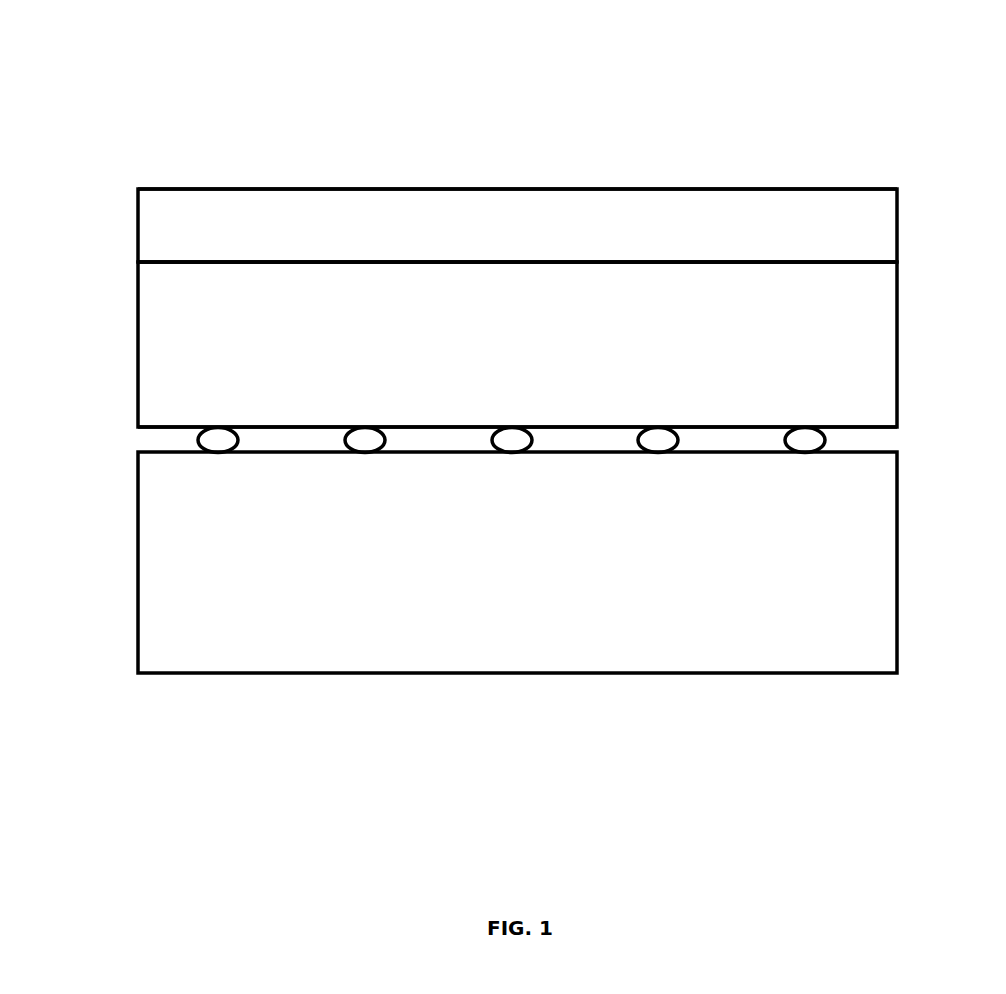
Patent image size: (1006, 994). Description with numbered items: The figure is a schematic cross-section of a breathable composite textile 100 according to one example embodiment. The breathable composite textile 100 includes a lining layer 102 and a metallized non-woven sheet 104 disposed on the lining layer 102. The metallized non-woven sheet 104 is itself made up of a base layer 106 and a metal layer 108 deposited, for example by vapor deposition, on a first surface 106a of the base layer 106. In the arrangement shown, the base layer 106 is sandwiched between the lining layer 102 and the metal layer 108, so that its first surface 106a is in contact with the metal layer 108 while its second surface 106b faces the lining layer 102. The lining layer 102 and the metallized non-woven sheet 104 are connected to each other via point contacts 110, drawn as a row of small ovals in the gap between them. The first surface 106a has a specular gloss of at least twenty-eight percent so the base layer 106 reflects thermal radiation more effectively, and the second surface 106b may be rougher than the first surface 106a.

The breathable composite textile 100 is at (505, 37).
The lining layer 102 is at (897, 580).
The metallized non-woven sheet 104 is at (536, 189).
The base layer 106 is at (897, 317).
The first surface 106a is at (162, 262).
The second surface 106b is at (165, 428).
The metal layer 108 is at (897, 218).
The point contacts 110 is at (825, 438).